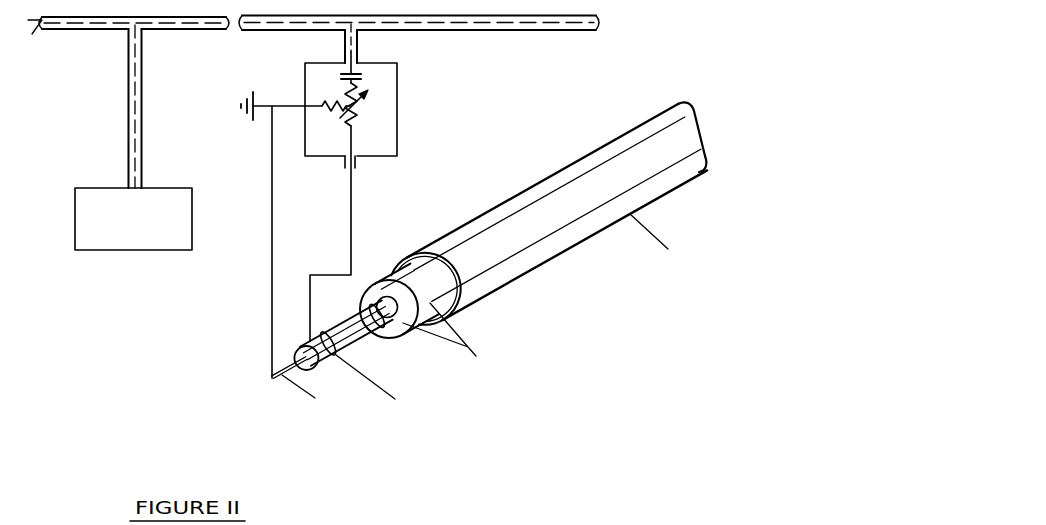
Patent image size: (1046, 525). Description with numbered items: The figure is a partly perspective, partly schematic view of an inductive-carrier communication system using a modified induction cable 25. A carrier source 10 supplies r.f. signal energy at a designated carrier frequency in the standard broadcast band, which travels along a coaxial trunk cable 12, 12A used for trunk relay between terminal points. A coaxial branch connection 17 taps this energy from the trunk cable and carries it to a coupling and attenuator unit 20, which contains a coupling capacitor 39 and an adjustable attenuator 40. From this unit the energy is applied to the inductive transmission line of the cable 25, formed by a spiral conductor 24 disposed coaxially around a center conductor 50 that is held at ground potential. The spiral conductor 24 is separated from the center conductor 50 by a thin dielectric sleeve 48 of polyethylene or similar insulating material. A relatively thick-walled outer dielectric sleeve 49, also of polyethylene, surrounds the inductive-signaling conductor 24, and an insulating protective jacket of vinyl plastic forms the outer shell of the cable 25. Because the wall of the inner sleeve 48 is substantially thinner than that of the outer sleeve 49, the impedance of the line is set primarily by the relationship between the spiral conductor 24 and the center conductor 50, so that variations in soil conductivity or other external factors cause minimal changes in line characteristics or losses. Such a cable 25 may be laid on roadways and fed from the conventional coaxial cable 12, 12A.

The carrier source 10 is at (197, 187).
The coaxial trunk cable 12 is at (113, 36).
The coaxial trunk cable 12A is at (36, 40).
The coaxial branch connection 17 is at (358, 57).
The coupling and attenuator unit 20 is at (335, 196).
The conductor 24 is at (318, 362).
The coaxial cable 25 is at (505, 186).
The coupling capacitor 39 is at (343, 78).
The adjustable attenuator 40 is at (359, 112).
The dielectric sleeve 48 is at (349, 322).
The dielectric sleeve 49 is at (394, 268).
The center conductor 50 is at (272, 378).